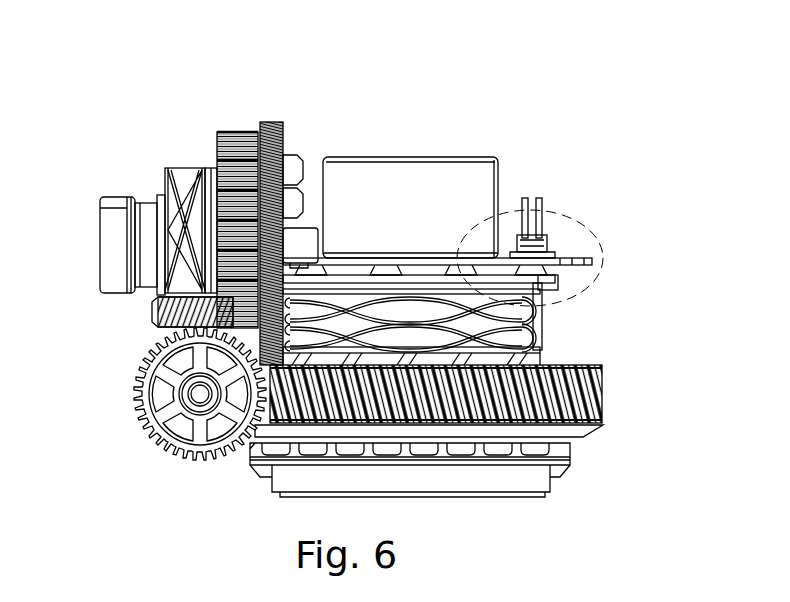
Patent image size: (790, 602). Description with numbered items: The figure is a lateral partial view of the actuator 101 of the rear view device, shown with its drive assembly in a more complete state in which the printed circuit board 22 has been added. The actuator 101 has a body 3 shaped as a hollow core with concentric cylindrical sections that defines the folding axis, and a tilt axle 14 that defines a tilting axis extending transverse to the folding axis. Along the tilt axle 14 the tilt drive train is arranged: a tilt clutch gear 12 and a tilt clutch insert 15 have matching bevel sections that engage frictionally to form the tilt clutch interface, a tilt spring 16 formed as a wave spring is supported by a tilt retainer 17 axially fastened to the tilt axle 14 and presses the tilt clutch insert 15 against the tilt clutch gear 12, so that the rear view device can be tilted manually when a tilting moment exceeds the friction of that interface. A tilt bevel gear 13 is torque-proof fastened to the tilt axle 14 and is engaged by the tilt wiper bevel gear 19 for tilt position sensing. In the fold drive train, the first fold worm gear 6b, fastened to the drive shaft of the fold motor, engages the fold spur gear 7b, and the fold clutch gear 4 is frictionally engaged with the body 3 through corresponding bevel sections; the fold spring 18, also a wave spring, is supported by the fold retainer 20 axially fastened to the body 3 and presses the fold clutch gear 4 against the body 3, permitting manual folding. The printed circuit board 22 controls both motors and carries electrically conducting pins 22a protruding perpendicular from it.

The actuator 101 is at (531, 66).
The body 3 is at (404, 157).
The fold clutch gear 4 is at (603, 398).
The first fold worm gear 6b is at (152, 325).
The fold spur gear 7b is at (150, 448).
The tilt clutch gear 12 is at (232, 130).
The tilt bevel gear 13 is at (278, 124).
The tilt axle 14 is at (133, 292).
The tilt clutch insert 15 is at (210, 168).
The tilt spring 16 is at (180, 168).
The tilt retainer 17 is at (137, 195).
The fold spring 18 is at (545, 318).
The tilt wiper bevel gear 19 is at (550, 354).
The fold retainer 20 is at (560, 277).
The printed circuit board 22 is at (598, 262).
The electrically conducting pins 22a is at (540, 198).